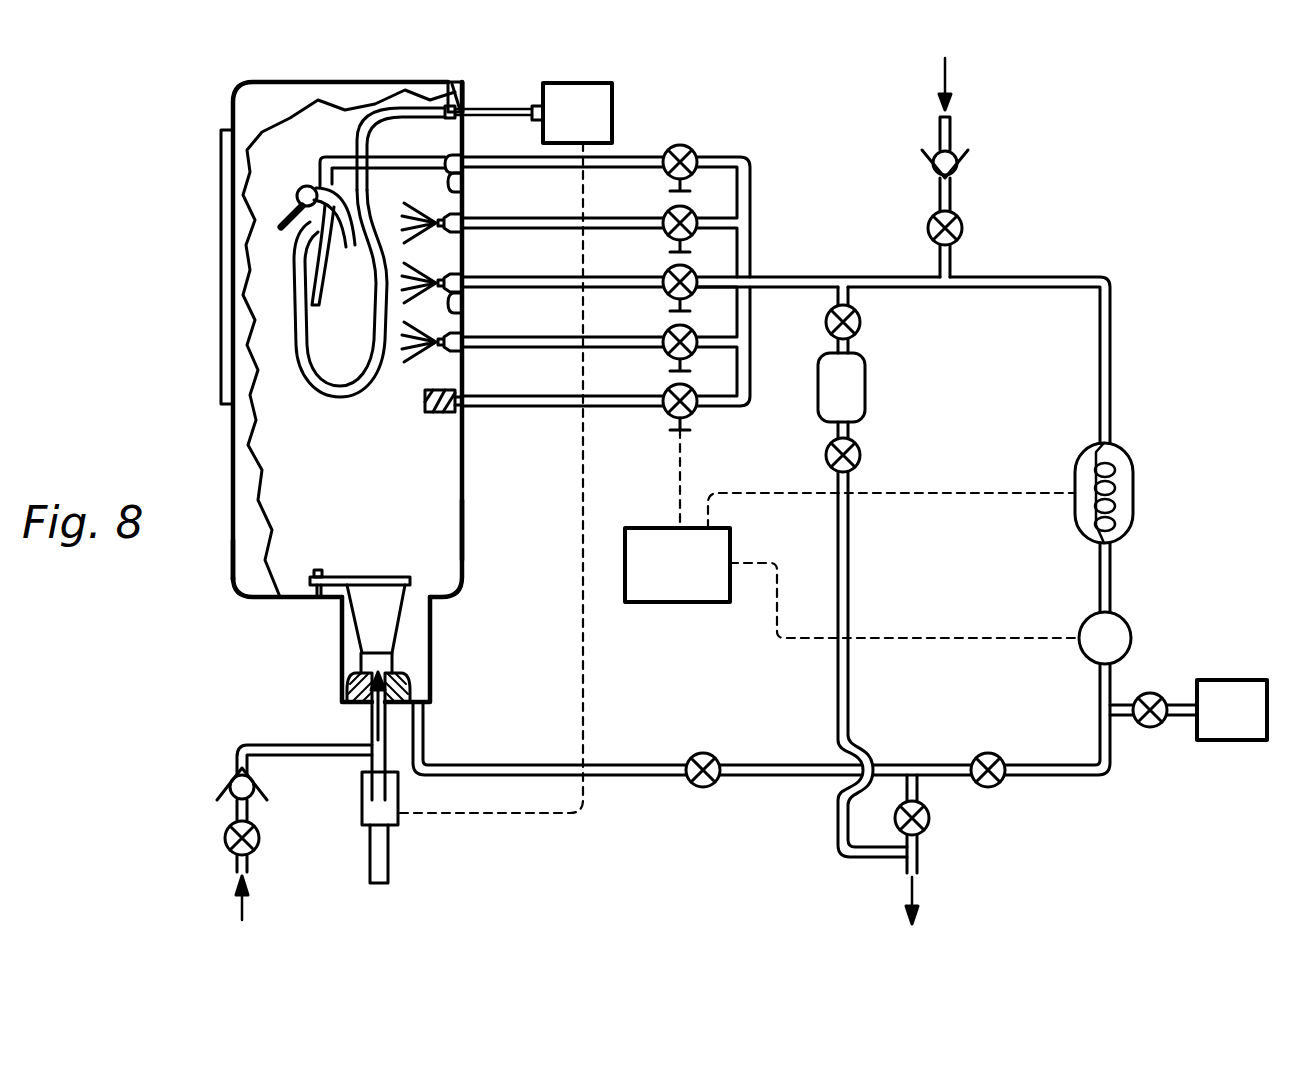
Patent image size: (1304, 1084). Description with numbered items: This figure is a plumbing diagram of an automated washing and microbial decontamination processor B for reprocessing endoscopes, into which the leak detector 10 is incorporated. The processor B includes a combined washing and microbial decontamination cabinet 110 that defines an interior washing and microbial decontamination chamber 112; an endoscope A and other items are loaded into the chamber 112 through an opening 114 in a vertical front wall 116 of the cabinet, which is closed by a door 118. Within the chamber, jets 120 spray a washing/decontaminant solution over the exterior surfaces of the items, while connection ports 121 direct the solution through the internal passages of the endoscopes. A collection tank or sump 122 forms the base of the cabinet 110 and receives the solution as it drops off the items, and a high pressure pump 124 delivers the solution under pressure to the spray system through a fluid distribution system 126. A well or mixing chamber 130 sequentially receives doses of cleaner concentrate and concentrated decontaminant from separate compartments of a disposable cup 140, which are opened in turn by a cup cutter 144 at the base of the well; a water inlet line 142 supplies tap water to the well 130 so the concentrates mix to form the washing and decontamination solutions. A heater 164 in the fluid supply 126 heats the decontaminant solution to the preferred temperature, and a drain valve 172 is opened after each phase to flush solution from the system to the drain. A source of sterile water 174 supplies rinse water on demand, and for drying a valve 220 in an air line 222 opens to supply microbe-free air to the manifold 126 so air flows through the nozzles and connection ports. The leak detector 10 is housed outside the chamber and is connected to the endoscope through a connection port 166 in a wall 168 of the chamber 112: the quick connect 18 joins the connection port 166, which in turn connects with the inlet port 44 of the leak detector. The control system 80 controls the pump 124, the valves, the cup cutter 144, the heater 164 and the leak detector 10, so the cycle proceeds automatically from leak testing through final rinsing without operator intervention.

The leak detector 10 is at (590, 112).
The quick connect 18 is at (447, 118).
The inlet port 44 is at (534, 120).
The control system 80 is at (693, 602).
The combined washing and microbial decontamination cabinet 110 is at (347, 80).
The interior washing and microbial decontamination chamber 112 is at (372, 482).
The opening 114 is at (225, 384).
The vertical front wall 116 is at (234, 552).
The door 118 is at (222, 320).
The jets 120 is at (460, 306).
The connection ports 121 is at (463, 180).
The collection tank or sump 122 is at (405, 532).
The high pressure pump 124 is at (1133, 637).
The fluid distribution system 126 is at (1027, 276).
The well or mixing chamber 130 is at (433, 623).
The disposable cup 140 is at (390, 635).
The water inlet line 142 is at (277, 740).
The cup cutter 144 is at (395, 852).
The heater 164 is at (1133, 493).
The connection port 166 is at (453, 78).
The wall 168 is at (463, 97).
The drain valve 172 is at (930, 820).
The source of sterile water 174 is at (1240, 680).
The valve 220 is at (965, 228).
The air line 222 is at (968, 182).
The endoscope A is at (293, 360).
The automated washing and microbial decontamination processor B is at (645, 78).